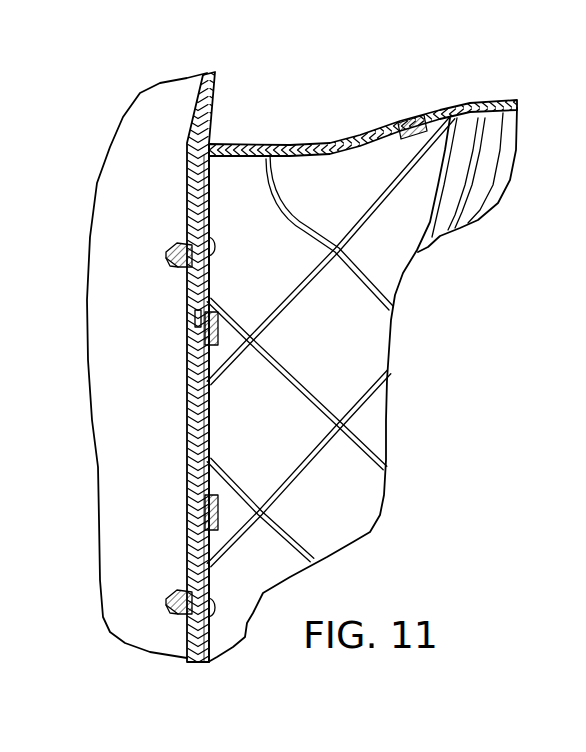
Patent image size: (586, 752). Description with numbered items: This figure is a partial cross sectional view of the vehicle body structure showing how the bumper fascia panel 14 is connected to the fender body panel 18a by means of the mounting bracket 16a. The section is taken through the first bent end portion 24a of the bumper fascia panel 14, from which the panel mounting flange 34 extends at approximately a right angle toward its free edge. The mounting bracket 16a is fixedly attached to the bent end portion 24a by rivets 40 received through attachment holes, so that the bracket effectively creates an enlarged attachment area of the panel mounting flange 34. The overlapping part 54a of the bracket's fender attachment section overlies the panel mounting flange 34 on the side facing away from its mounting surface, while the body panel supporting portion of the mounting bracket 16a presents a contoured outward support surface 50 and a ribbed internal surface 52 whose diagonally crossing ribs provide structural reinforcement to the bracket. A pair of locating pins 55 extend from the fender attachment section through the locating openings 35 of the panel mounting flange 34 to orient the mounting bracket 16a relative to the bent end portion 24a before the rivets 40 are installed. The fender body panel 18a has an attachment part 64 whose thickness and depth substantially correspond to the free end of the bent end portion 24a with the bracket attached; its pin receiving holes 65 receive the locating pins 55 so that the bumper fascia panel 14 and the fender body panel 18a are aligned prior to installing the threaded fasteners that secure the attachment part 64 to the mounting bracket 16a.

The bumper fascia panel 14 is at (327, 72).
The mounting bracket 16a is at (438, 346).
The fender body panel 18a is at (93, 432).
The first bent end portion 24a is at (501, 96).
The panel mounting flange 34 is at (198, 368).
The locating openings 35 is at (212, 243).
The rivets 40 is at (406, 138).
The contoured outward support surface 50 is at (345, 505).
The ribbed internal surface 52 is at (370, 444).
The overlapping part 54a is at (211, 283).
The locating pins 55 is at (180, 252).
The attachment part 64 is at (195, 310).
The pin receiving holes 65 is at (172, 265).